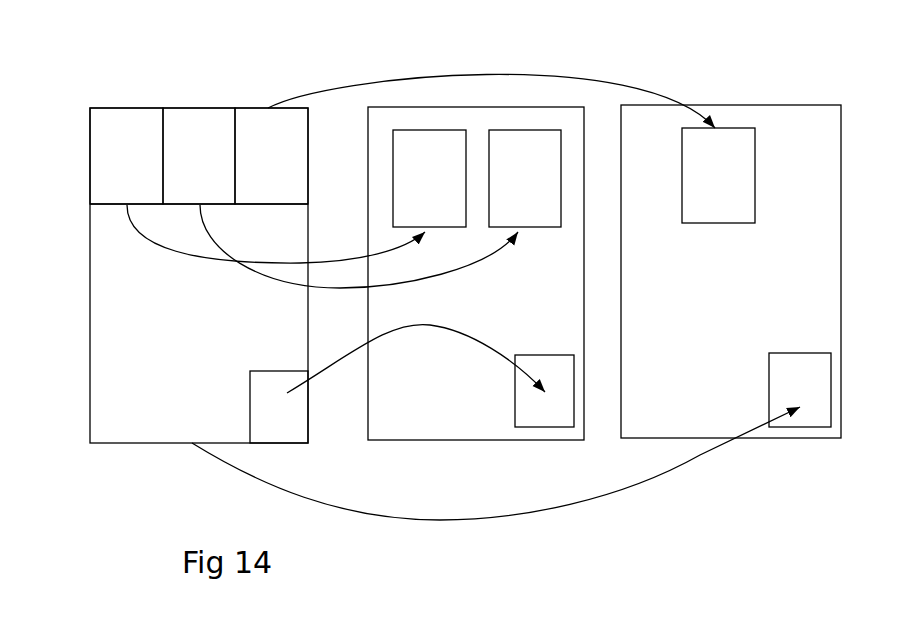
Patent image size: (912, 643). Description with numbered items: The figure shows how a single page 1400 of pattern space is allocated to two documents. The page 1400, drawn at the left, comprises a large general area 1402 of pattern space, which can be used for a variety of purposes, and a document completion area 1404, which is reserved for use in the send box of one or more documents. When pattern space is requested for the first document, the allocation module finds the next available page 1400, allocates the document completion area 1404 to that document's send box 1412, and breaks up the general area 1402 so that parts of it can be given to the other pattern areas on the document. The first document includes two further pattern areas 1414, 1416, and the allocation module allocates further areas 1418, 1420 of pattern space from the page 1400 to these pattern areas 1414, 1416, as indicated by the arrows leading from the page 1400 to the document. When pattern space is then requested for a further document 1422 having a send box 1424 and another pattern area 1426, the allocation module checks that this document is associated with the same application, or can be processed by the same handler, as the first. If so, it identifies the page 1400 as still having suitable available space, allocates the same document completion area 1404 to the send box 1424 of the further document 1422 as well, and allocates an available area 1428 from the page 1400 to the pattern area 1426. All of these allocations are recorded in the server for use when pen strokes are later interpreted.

The page of pattern space 1400 is at (160, 268).
The general area 1402 is at (91, 277).
The document completion area 1404 is at (249, 404).
The send box 1412 is at (547, 427).
The pattern area 1414 is at (428, 130).
The pattern area 1416 is at (524, 130).
The area of pattern space 1418 is at (125, 108).
The area of pattern space 1420 is at (198, 108).
The further document 1422 is at (732, 105).
The send box 1424 is at (802, 427).
The pattern area 1426 is at (682, 173).
The available area 1428 is at (252, 108).